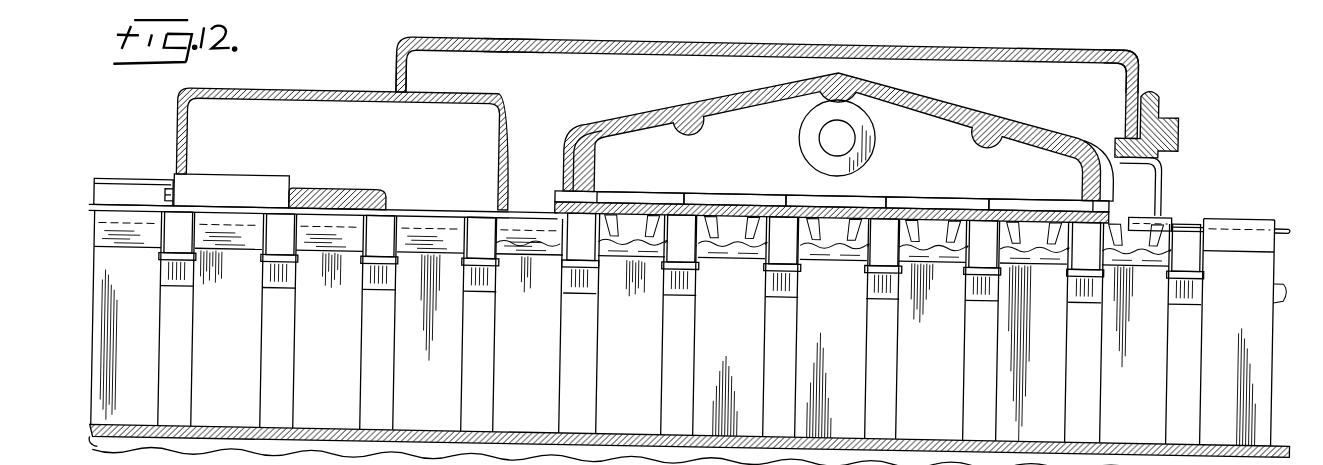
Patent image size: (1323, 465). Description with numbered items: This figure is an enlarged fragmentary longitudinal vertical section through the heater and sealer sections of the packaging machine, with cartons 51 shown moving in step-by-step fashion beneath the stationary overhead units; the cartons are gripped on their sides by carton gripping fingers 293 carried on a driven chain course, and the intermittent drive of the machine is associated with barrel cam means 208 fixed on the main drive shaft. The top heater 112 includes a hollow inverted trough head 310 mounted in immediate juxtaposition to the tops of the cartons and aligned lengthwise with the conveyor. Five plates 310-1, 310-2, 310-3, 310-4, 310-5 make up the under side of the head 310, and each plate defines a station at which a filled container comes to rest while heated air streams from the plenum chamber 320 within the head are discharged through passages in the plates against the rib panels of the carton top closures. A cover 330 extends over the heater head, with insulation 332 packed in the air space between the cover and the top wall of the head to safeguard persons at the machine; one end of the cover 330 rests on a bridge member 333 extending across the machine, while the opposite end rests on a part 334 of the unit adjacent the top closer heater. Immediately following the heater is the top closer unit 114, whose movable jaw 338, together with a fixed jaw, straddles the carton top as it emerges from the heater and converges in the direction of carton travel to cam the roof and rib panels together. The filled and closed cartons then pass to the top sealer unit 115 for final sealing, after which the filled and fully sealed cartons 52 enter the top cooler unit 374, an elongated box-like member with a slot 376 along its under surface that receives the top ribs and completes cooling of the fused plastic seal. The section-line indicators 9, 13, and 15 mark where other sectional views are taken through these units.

The carton 51 is at (304, 333).
The filled and fully sealed carton 52 is at (143, 368).
The barrel cam means 208 is at (171, 294).
The carton gripping fingers 293 is at (380, 287).
The slot 376 is at (122, 215).
The top cooler unit 374 is at (152, 186).
The top closer unit 114 is at (438, 165).
The top sealer unit 115 is at (250, 168).
The cover 330 is at (588, 50).
The part of the unit adjacent the top closer heater 334 is at (410, 92).
The insulation 332 is at (506, 54).
The top heater 112 is at (1133, 50).
The bridge member 333 is at (1113, 125).
The hollow inverted trough head 310 is at (695, 182).
The plate 310-1 is at (668, 163).
The plate 310-2 is at (773, 167).
The plate 310-3 is at (858, 190).
The plate 310-4 is at (968, 149).
The plate 310-5 is at (1025, 193).
The plenum chamber 320 is at (818, 141).
The movable jaw 338 is at (485, 233).
The section line 9- 9 is at (807, 282).
The section line 15- 15 is at (232, 464).
The section line 13- 13 is at (278, 237).